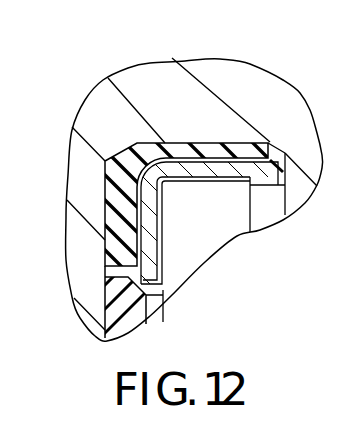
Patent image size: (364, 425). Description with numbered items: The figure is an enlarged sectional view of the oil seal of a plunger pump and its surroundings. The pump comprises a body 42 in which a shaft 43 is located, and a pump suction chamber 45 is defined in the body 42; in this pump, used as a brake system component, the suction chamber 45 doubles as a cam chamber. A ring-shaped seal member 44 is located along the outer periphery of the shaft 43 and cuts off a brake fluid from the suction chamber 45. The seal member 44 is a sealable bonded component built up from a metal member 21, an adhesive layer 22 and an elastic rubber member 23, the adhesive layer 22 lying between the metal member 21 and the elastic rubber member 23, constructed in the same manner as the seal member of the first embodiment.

The metal member 21 is at (252, 150).
The adhesive layer 22 is at (251, 142).
The elastic rubber member 23 is at (208, 146).
The body 42 is at (92, 102).
The shaft 43 is at (105, 326).
The seal member 44 is at (193, 197).
The pump suction chamber 45 is at (218, 221).